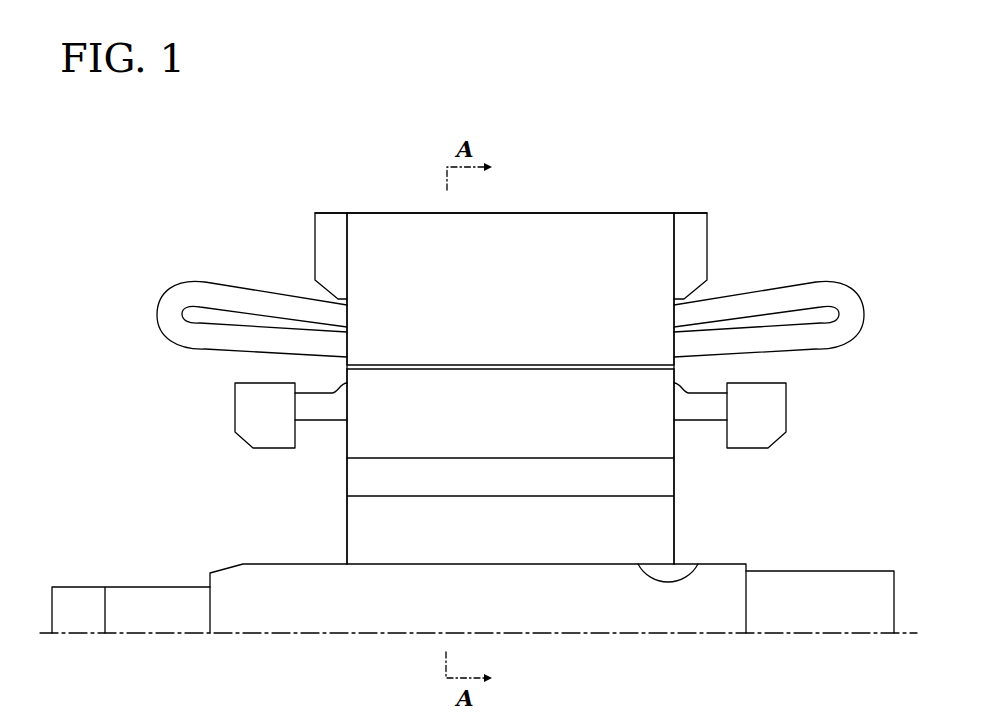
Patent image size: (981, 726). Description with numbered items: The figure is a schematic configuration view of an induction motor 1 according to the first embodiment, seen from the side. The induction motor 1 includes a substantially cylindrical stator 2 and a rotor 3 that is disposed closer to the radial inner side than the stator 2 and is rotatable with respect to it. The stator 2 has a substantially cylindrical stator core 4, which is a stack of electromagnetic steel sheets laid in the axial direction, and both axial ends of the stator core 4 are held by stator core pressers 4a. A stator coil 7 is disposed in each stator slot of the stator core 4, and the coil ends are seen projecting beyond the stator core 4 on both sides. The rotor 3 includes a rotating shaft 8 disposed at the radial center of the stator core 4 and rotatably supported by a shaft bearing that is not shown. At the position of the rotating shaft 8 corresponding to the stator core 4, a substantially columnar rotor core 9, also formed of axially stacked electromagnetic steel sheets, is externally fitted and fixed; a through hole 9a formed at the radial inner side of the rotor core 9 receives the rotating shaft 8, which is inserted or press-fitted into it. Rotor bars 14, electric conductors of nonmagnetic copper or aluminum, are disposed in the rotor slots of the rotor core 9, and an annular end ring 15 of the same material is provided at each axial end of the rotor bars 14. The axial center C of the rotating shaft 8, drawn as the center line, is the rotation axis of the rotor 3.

The induction motor 1 is at (792, 166).
The stator 2 is at (646, 198).
The rotor 3 is at (696, 506).
The stator core 4 is at (575, 213).
The stator core presser 4a is at (315, 248).
The stator coil 7 is at (167, 292).
The rotating shaft 8 is at (263, 562).
The rotor core 9 is at (675, 450).
The through hole 9a is at (688, 564).
The rotor bar 14 is at (318, 422).
The end ring 15 is at (235, 405).
The axial center C is at (812, 633).